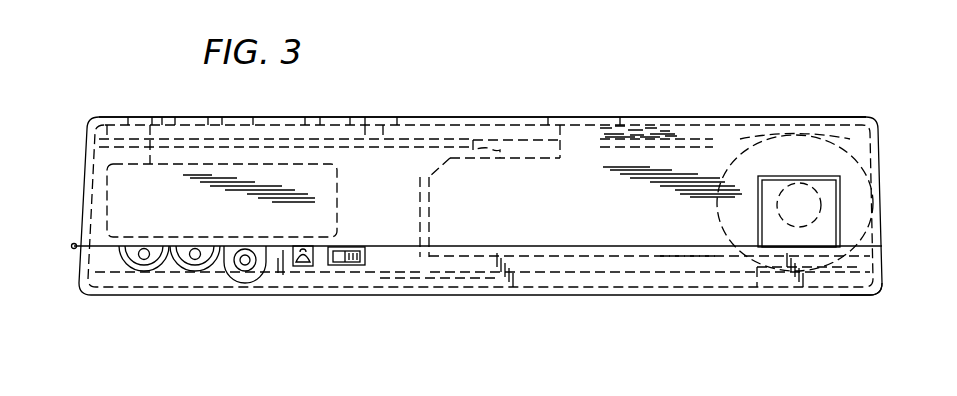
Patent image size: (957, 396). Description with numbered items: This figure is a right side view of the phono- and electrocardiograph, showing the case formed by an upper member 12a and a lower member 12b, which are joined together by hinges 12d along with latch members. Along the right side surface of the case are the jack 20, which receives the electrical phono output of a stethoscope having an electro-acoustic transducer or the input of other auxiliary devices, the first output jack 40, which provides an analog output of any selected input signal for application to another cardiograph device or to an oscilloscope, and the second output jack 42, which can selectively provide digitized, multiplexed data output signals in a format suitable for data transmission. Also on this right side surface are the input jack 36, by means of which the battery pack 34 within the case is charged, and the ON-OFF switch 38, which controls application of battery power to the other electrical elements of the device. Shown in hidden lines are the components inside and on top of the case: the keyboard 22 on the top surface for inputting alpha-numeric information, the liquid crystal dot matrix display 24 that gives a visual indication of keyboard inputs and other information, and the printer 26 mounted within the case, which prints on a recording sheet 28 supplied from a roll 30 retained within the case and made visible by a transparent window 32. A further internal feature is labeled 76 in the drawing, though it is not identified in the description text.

The upper member 12a is at (853, 118).
The lower member 12b is at (872, 297).
The hinges 12d is at (72, 247).
The jack 20 is at (144, 262).
The keyboard 22 is at (390, 111).
The liquid crystal dot matrix display 24 is at (508, 122).
The printer 26 is at (715, 140).
The recording sheet 28 is at (724, 76).
The roll 30 is at (866, 156).
The transparent window 32 is at (807, 122).
The battery pack 34 is at (148, 116).
The input jack 36 is at (306, 268).
The ON-OFF switch 38 is at (357, 268).
The first output jack 40 is at (195, 262).
The second output jack 42 is at (247, 272).
The partition 76 is at (715, 140).